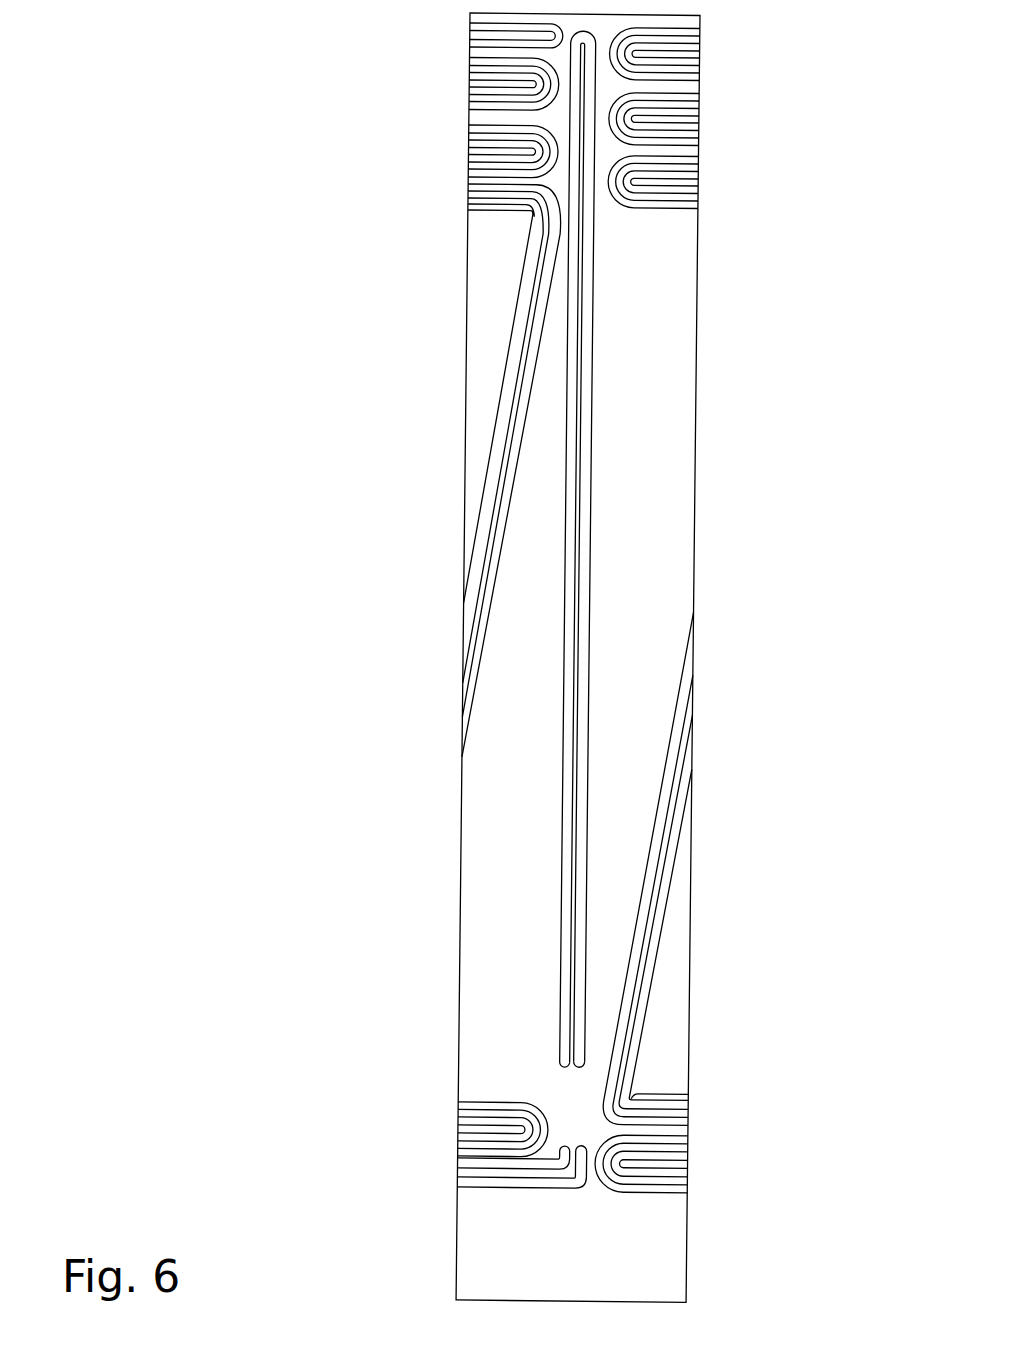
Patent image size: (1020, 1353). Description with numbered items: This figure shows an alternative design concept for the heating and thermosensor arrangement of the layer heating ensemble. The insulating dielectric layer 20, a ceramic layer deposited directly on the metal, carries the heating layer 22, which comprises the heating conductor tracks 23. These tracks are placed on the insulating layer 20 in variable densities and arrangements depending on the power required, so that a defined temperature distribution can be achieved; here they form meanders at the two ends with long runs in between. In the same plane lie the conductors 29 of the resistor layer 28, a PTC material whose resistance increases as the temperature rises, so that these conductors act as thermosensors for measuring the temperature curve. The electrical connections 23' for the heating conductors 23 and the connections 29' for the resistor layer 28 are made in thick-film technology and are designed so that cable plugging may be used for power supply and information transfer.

The insulating dielectric layer 20 is at (495, 842).
The heating layer 22 is at (503, 239).
The heating conductor tracks 23 is at (495, 608).
The connection 23' is at (457, 1194).
The resistor layer 28 is at (612, 460).
The thermosensor conductors 29 is at (673, 552).
The connection 29' is at (450, 1031).